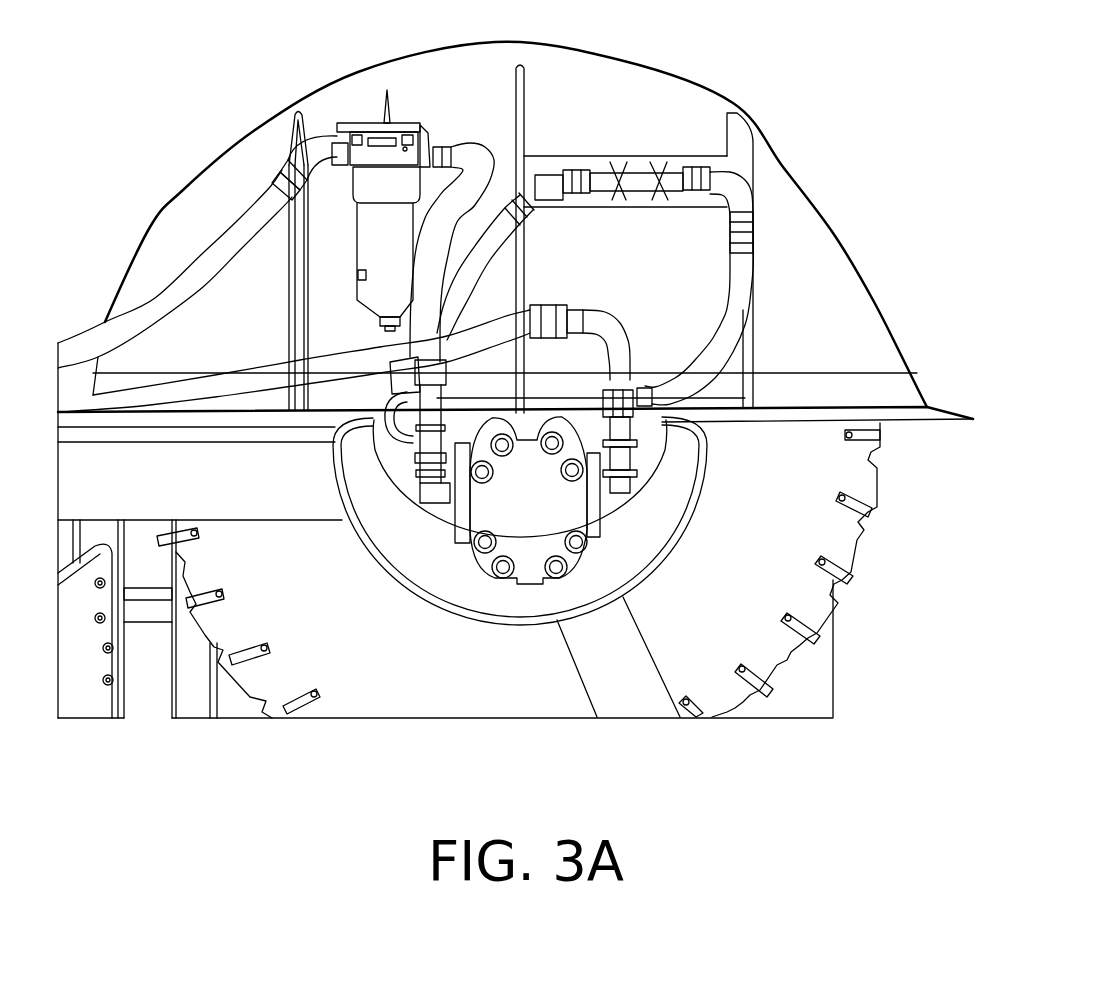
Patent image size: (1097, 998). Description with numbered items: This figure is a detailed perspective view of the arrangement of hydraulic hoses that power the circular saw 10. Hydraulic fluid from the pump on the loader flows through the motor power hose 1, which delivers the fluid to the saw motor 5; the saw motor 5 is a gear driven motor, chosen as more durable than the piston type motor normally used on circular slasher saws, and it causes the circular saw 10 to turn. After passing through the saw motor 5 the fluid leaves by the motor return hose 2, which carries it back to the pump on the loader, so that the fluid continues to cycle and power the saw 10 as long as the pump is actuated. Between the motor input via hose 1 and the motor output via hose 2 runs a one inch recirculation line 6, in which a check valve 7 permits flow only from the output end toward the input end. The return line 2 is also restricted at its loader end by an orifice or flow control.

The motor power hose 1 is at (640, 462).
The motor return hose 2 is at (215, 262).
The saw motor 5 is at (532, 518).
The recirculation line 6 is at (740, 190).
The check valve 7 is at (640, 165).
The circular saw 10 is at (827, 620).